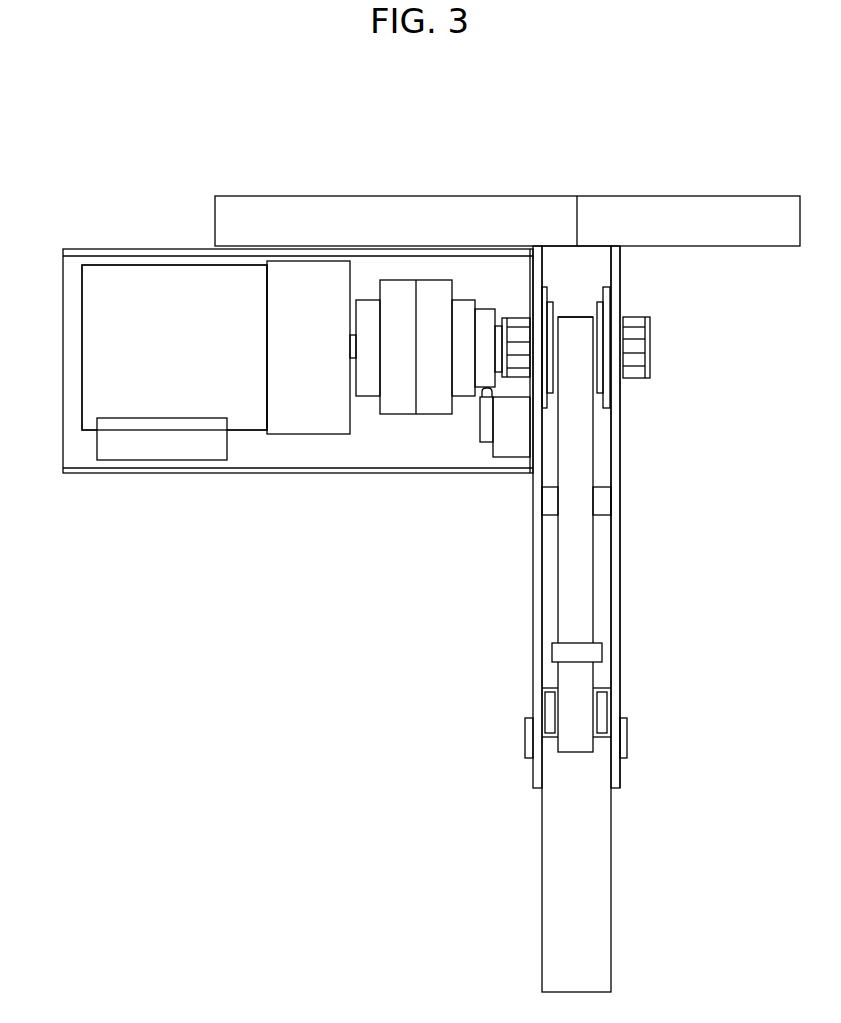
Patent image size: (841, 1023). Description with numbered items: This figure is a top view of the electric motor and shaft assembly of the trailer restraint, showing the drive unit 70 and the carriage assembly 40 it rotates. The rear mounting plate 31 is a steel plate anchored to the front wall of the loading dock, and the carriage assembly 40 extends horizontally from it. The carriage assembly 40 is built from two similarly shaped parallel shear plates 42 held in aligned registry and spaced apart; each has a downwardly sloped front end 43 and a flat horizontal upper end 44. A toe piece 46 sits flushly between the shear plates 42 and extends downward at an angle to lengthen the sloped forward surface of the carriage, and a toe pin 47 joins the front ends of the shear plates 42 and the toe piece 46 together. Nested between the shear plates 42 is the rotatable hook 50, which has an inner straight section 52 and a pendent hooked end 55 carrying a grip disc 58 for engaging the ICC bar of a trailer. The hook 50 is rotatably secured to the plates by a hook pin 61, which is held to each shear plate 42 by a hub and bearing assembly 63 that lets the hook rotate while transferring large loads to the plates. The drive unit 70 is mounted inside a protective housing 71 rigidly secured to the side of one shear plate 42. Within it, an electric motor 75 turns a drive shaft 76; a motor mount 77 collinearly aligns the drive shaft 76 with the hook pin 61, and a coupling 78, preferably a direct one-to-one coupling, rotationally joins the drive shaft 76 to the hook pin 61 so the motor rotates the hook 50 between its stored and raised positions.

The mounting plate 31 is at (377, 203).
The drive unit 70 is at (64, 317).
The protective housing 71 is at (115, 253).
The electric motor 75 is at (178, 355).
The drive shaft 76 is at (345, 346).
The motor mount 77 is at (321, 364).
The coupling 78 is at (448, 354).
The hub and bearing assembly 63 is at (522, 326).
The hook pin 61 is at (611, 328).
The carriage assembly 40 is at (572, 619).
The shear plates 42 is at (537, 555).
The downwardly sloped front ends 43 is at (617, 547).
The flat horizontal upper ends 44 is at (618, 426).
The toe piece 46 is at (595, 918).
The hook 50 is at (587, 583).
The inner straight section 52 is at (582, 447).
The hooked end 55 is at (585, 678).
The grip disc 58 is at (595, 653).
The toe pin 47 is at (627, 742).